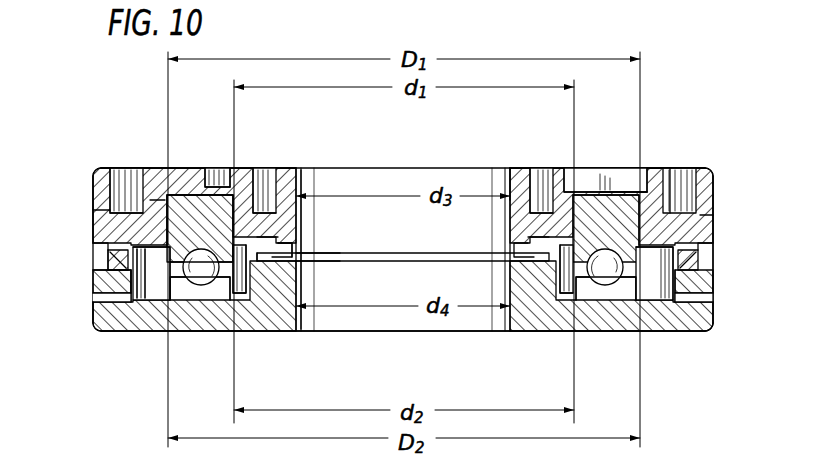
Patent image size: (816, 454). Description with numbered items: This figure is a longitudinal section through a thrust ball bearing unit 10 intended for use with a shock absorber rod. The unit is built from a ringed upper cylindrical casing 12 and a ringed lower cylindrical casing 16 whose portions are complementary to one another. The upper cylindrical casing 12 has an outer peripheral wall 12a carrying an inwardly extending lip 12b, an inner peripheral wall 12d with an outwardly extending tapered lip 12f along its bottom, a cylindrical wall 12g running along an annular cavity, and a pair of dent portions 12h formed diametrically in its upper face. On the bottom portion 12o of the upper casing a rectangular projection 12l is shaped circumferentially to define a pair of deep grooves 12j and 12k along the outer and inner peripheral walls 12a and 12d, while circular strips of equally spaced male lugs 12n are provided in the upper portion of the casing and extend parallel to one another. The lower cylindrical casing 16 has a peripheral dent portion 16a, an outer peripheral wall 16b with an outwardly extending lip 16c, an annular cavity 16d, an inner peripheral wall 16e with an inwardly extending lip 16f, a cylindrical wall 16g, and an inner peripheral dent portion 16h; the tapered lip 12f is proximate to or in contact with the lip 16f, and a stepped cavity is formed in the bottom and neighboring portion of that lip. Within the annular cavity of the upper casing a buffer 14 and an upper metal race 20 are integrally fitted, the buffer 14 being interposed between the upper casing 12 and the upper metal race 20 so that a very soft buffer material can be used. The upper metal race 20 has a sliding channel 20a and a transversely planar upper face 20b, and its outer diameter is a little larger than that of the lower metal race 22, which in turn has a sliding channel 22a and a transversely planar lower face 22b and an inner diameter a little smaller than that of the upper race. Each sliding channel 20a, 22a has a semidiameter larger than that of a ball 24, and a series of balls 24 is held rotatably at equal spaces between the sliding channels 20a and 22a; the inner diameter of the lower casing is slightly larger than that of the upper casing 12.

The thrust ball bearing unit 10 is at (722, 181).
The upper cylindrical casing 12 is at (705, 172).
The outer peripheral wall 12a is at (93, 190).
The inwardly extending lip 12b is at (108, 262).
The inner peripheral wall 12d is at (303, 213).
The outwardly extending lip 12f is at (285, 255).
The cylindrical wall 12g is at (160, 200).
The dent portions 12h is at (564, 187).
The deep groove 12j is at (112, 168).
The deep groove 12k is at (274, 168).
The rectangular projection 12l is at (192, 186).
The male lugs 12n is at (262, 180).
The bottom portion 12o is at (113, 210).
The buffer 14 is at (173, 190).
The lower cylindrical casing 16 is at (707, 335).
The peripheral dent portion 16a is at (100, 291).
The outer peripheral wall 16b is at (113, 303).
The outwardly extending lip 16c is at (128, 246).
The annular cavity 16d is at (150, 300).
The inner peripheral wall 16e is at (245, 298).
The inwardly extending lip 16f is at (262, 256).
The cylindrical wall 16g is at (218, 302).
The inner peripheral dent portion 16h is at (300, 262).
The upper metal race 20 is at (632, 225).
The sliding channel 20a is at (506, 172).
The upper face 20b is at (616, 225).
The lower metal race 22 is at (608, 302).
The sliding channel 22a is at (575, 290).
The lower face 22b is at (616, 305).
The ball 24 is at (122, 190).